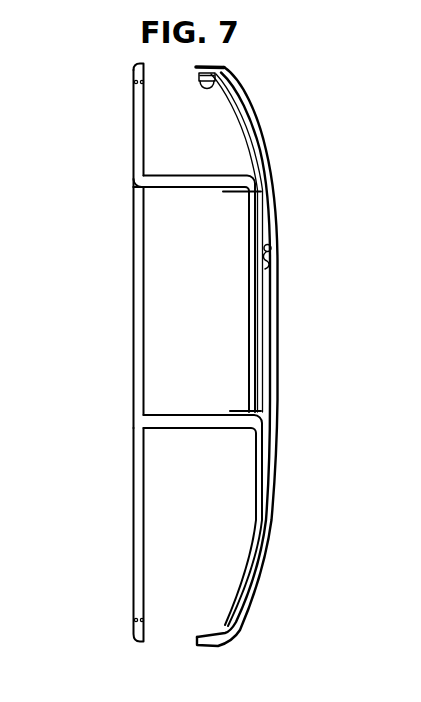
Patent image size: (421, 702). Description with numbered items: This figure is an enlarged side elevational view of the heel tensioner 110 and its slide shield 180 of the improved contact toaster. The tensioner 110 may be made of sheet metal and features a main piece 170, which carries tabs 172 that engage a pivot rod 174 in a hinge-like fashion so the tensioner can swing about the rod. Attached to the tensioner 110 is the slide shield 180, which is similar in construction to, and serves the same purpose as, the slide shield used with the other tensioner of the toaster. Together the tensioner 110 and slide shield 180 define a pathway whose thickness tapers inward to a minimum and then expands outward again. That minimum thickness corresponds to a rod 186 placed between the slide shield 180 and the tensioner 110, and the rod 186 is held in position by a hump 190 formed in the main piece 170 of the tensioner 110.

The tensioner 110 is at (196, 597).
The main piece 170 is at (243, 127).
The tabs 172 is at (232, 410).
The pivot rod 174 is at (150, 104).
The slide shield 180 is at (255, 612).
The rod 186 is at (272, 242).
The hump 190 is at (269, 258).